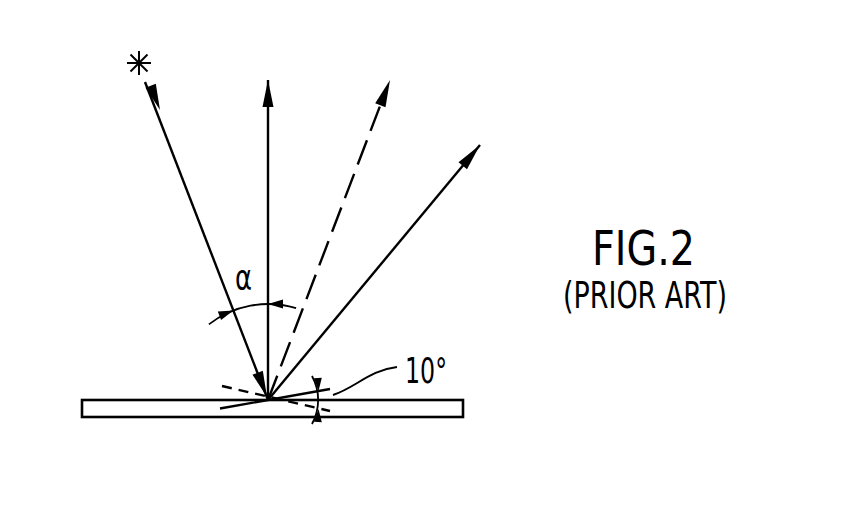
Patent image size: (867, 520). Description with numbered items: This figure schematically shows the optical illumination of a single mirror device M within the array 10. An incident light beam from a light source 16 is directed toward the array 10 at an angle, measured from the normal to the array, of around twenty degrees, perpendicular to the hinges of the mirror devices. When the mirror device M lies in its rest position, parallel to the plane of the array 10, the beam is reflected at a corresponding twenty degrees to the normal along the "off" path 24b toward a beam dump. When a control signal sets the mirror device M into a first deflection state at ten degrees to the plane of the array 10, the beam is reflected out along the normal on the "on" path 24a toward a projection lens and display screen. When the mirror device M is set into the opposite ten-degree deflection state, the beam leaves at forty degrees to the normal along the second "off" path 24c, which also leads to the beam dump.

The array 10 is at (130, 400).
The light source 16 is at (134, 46).
The "on" path 24a is at (268, 174).
The "off" path 24b is at (350, 186).
The second "off" path 24c is at (405, 237).
The mirror device M is at (240, 407).